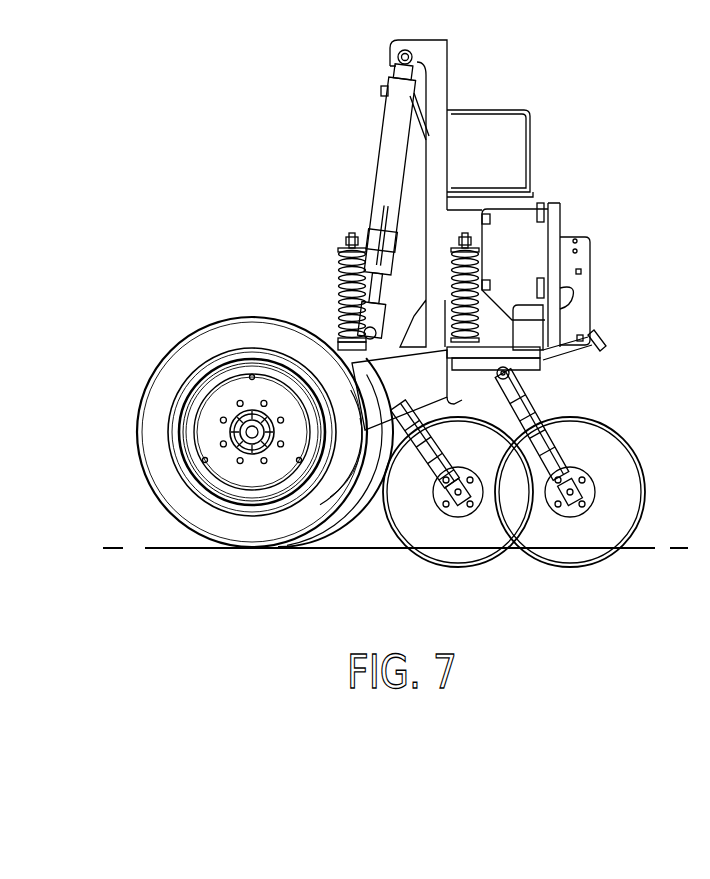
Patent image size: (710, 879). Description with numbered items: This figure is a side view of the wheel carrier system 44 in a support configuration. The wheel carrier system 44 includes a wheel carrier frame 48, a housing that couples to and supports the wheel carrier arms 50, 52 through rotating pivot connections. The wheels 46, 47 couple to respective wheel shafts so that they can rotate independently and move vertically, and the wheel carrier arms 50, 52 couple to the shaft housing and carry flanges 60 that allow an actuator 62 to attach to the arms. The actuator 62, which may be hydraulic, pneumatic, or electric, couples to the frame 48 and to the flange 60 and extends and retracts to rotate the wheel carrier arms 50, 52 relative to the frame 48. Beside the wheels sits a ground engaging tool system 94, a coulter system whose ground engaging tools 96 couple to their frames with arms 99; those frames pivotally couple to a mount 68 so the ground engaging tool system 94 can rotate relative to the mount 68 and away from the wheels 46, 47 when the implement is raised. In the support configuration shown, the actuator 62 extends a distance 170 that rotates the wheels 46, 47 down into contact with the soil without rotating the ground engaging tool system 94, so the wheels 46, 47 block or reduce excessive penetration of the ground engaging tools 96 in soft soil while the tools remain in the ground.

The wheel carrier system 44 is at (205, 127).
The wheel 46 is at (162, 465).
The wheel 47 is at (338, 528).
The wheel carrier frame 48 is at (430, 57).
The wheel carrier arm 50 is at (392, 380).
The wheel carrier arm 52 is at (448, 412).
The flange 60 is at (403, 300).
The actuator 62 is at (399, 128).
The mount 68 is at (558, 247).
The ground engaging tool system 94 is at (622, 362).
The ground engaging tool 96 is at (622, 500).
The arm 99 is at (548, 412).
The distance 170 is at (306, 345).